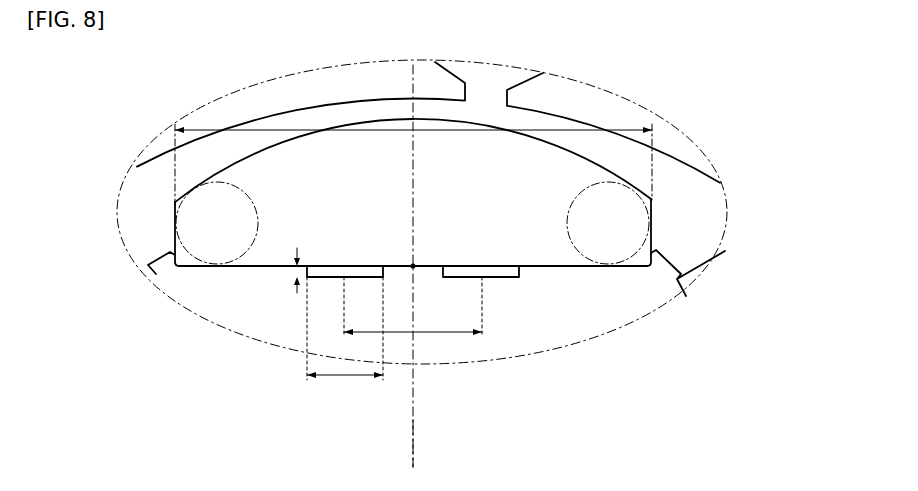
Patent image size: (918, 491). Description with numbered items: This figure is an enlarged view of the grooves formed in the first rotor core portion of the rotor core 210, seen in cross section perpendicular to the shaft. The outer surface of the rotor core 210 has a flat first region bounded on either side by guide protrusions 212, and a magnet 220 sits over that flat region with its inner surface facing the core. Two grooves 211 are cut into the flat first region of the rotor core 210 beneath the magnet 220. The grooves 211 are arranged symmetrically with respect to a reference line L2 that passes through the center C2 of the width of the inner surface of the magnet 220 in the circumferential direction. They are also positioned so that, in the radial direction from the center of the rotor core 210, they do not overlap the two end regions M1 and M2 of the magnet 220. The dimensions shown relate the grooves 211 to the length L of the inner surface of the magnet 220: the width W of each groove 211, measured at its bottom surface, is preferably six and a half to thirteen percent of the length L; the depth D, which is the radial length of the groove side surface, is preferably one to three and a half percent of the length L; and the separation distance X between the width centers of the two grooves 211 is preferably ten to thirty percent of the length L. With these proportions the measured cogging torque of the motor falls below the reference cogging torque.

The magnet 220 is at (537, 170).
The rotor core 210 is at (282, 318).
The groove 211 is at (508, 278).
The guide protrusion 212 is at (150, 256).
The first end region of the magnet M1 is at (175, 210).
The second end region of the magnet M2 is at (653, 203).
The length of the inner surface of the magnet L is at (286, 130).
The depth of the groove D is at (297, 273).
The center of the width of the inner surface of the magnet C2 is at (416, 270).
The separation distance between the two grooves X is at (427, 336).
The width of the groove W is at (345, 380).
The reference line L2 is at (415, 460).